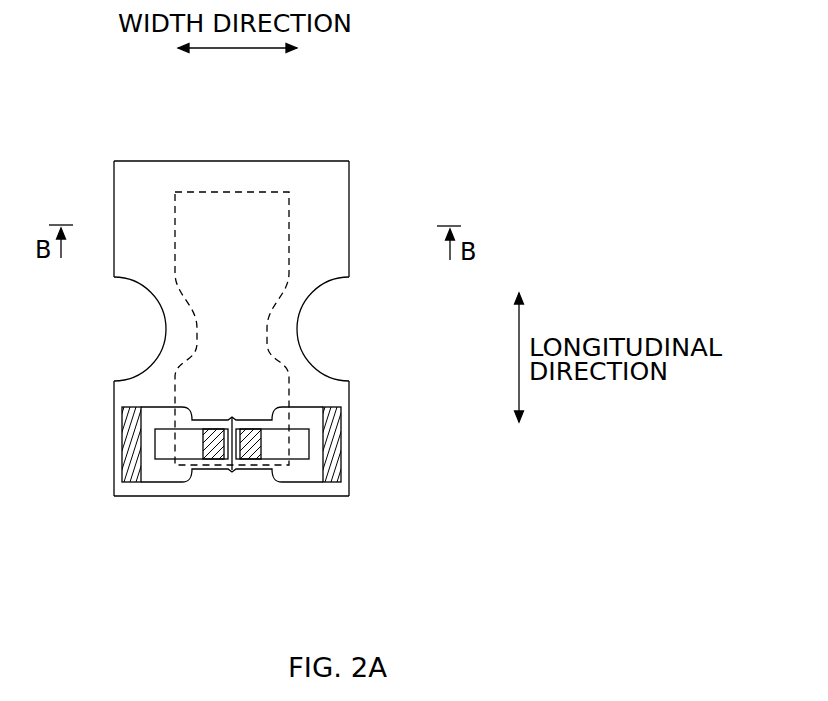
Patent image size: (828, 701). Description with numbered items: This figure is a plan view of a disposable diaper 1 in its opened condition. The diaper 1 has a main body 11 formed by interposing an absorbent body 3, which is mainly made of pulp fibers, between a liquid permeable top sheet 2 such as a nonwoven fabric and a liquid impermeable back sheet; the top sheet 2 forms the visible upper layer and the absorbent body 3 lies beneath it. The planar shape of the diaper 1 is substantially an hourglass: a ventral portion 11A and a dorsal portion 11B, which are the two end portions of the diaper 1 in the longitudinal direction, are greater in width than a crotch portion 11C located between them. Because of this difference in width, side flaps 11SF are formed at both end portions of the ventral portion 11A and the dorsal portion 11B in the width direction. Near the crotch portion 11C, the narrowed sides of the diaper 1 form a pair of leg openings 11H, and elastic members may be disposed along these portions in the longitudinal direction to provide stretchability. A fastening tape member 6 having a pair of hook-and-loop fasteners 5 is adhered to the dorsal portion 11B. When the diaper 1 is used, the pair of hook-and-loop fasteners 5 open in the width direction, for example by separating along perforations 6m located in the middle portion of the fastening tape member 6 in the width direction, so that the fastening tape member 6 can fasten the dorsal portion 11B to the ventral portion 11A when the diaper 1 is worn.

The disposable diaper 1 is at (240, 150).
The main body 11 is at (259, 329).
The ventral portion 11A is at (365, 160).
The dorsal portion 11B is at (365, 385).
The crotch portion 11C is at (365, 281).
The leg opening 11H is at (158, 332).
The side flap 11SF is at (131, 150).
The top sheet 2 is at (258, 161).
The absorbent body 3 is at (198, 212).
The hook-and-loop fastener 5 is at (212, 460).
The fastening tape member 6 is at (305, 495).
The perforations 6m is at (231, 480).